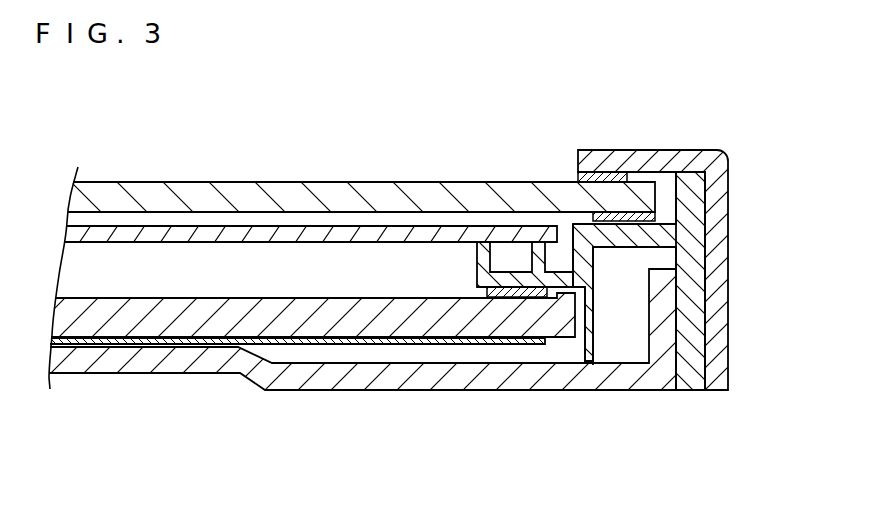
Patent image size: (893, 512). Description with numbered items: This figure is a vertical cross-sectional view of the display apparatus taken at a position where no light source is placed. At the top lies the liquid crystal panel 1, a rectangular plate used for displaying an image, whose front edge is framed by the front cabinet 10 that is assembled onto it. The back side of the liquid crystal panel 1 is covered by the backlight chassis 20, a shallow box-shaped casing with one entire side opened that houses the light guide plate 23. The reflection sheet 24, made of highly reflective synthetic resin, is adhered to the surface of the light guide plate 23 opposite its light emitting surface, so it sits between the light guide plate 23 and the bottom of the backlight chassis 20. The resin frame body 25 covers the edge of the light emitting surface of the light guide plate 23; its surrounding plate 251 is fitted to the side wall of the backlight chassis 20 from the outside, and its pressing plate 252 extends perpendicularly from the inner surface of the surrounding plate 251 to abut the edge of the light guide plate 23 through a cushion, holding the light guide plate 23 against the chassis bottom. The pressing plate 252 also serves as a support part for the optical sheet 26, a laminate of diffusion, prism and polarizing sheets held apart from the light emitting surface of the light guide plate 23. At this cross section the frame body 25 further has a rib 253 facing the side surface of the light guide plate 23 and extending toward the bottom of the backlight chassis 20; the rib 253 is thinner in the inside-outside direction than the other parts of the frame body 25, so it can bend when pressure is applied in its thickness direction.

The liquid crystal panel 1 is at (416, 190).
The front cabinet 10 is at (666, 152).
The backlight chassis 20 is at (466, 382).
The light guide plate 23 is at (352, 323).
The reflection sheet 24 is at (417, 342).
The frame body 25 is at (819, 212).
The surrounding plate 251 is at (695, 320).
The pressing plate 252 is at (645, 245).
The rib 253 is at (588, 320).
The optical sheet 26 is at (301, 233).